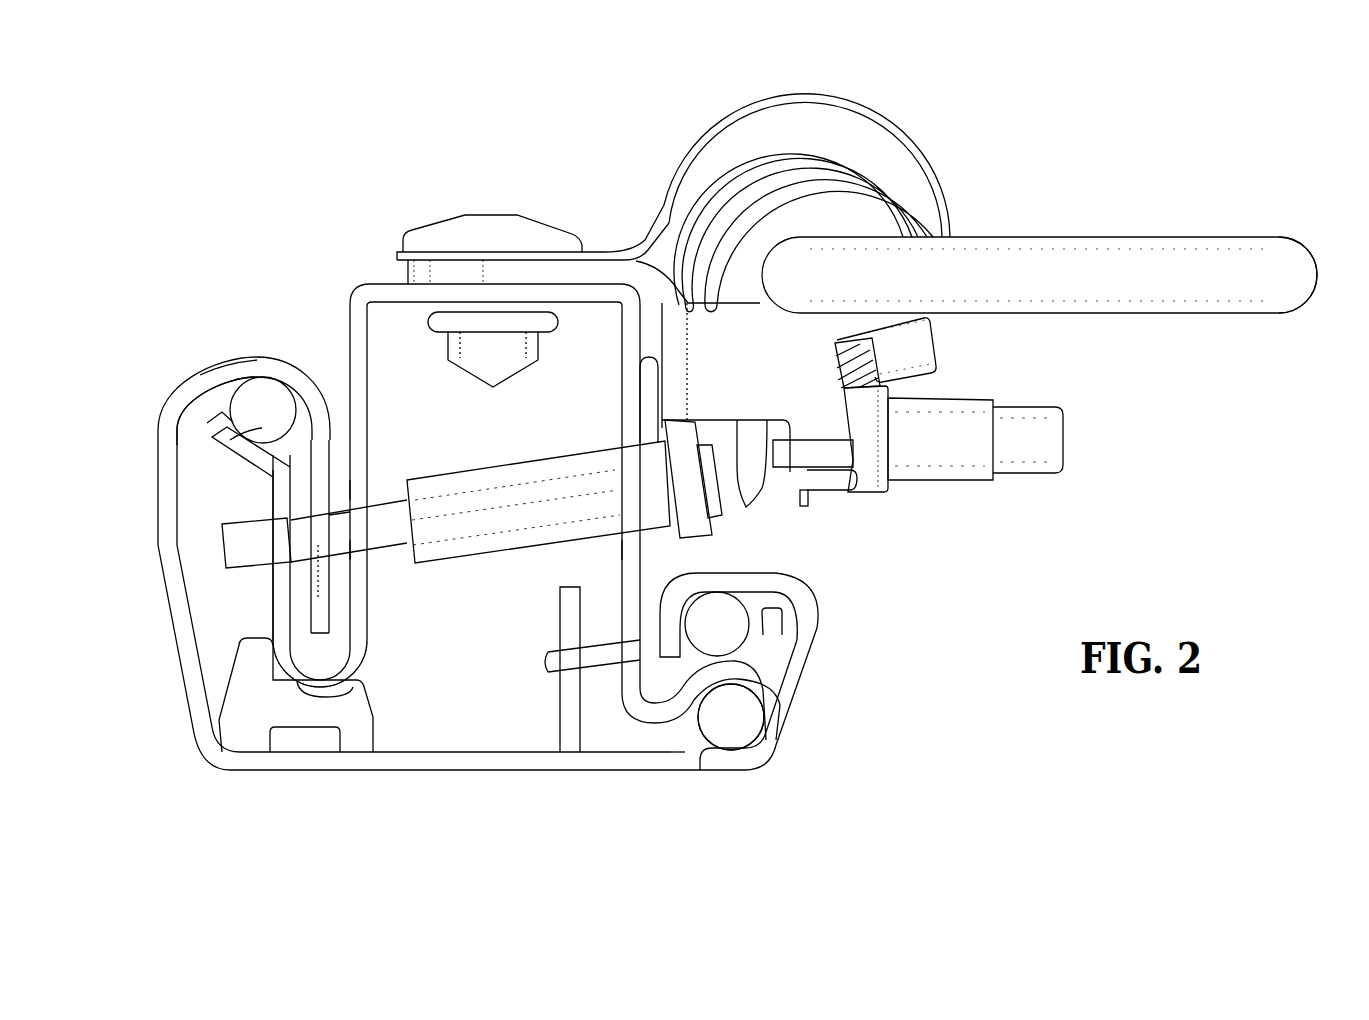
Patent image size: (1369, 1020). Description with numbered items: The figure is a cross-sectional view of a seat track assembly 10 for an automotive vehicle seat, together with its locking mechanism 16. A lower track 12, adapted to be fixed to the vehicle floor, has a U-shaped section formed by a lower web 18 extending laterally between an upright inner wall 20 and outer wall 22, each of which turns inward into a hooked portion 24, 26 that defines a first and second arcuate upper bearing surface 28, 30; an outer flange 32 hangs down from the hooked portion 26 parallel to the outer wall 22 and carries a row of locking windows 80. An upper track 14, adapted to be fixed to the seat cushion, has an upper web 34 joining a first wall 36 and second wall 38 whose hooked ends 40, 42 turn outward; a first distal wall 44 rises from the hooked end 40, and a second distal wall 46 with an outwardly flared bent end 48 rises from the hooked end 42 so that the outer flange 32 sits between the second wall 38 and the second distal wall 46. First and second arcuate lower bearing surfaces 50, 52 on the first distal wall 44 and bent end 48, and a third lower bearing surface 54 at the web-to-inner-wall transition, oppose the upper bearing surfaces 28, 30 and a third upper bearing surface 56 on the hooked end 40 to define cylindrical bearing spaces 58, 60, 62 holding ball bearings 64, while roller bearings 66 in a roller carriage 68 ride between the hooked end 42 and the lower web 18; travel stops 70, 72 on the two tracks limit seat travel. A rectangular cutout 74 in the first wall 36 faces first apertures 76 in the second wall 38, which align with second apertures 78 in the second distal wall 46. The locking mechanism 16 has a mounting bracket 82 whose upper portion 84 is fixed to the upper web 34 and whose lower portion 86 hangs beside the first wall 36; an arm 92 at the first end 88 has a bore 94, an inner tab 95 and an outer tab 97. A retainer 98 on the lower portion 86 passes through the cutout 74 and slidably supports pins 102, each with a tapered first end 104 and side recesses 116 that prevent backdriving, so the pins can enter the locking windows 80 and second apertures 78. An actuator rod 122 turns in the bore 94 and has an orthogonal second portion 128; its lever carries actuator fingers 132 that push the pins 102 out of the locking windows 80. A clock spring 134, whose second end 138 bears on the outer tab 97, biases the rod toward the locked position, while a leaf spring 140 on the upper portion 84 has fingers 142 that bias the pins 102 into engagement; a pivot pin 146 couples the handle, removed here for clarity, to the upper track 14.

The track assembly 10 is at (200, 220).
The lower track 12 is at (232, 758).
The upper track 14 is at (368, 298).
The locking mechanism 16 is at (945, 145).
The lower web 18 is at (485, 768).
The inner wall 20 is at (807, 657).
The outer wall 22 is at (164, 533).
The hooked portion 24 is at (803, 600).
The hooked portion 26 is at (170, 397).
The first arcuate upper bearing surface 28 is at (695, 595).
The second arcuate upper bearing surface 30 is at (270, 380).
The outer flange 32 is at (323, 613).
The upper web 34 is at (420, 302).
The first wall 36 is at (625, 402).
The second wall 38 is at (360, 377).
The hooked end 40 is at (647, 715).
The hooked end 42 is at (330, 672).
The first distal wall 44 is at (773, 627).
The second distal wall 46 is at (280, 607).
The bent end 48 is at (223, 443).
The first arcuate lower bearing surface 50 is at (750, 707).
The second arcuate lower bearing surface 52 is at (210, 430).
The third arcuate lower bearing surface 54 is at (763, 753).
The third arcuate upper bearing surface 56 is at (713, 742).
The bearing space 58 is at (757, 603).
The bearing space 60 is at (223, 390).
The bearing space 62 is at (700, 740).
The ball bearings 64 is at (260, 392).
The roller bearings 66 is at (357, 690).
The roller carriage 68 is at (240, 707).
The travel stop 70 is at (567, 620).
The travel stop 72 is at (570, 670).
The cutout 74 is at (633, 540).
The first apertures 76 is at (347, 497).
The second apertures 78 is at (290, 497).
The locking windows 80 is at (320, 563).
The mounting bracket 82 is at (673, 337).
The upper portion 84 is at (630, 262).
The lower portion 86 is at (670, 428).
The first end 88 is at (825, 397).
The arm 92 is at (880, 222).
The bore 94 is at (793, 233).
The inner tab 95 is at (925, 350).
The outer tab 97 is at (797, 470).
The retainer 98 is at (498, 545).
The pins 102 is at (387, 493).
The first end 104 is at (227, 540).
The recess 116 is at (340, 537).
The actuator rod 122 is at (1253, 293).
The second portion 128 is at (1148, 245).
The actuator fingers 132 is at (737, 470).
The clock spring 134 is at (835, 150).
The second end 138 is at (865, 482).
The leaf spring 140 is at (775, 92).
The fingers 142 is at (810, 500).
The pivot pin 146 is at (1063, 435).